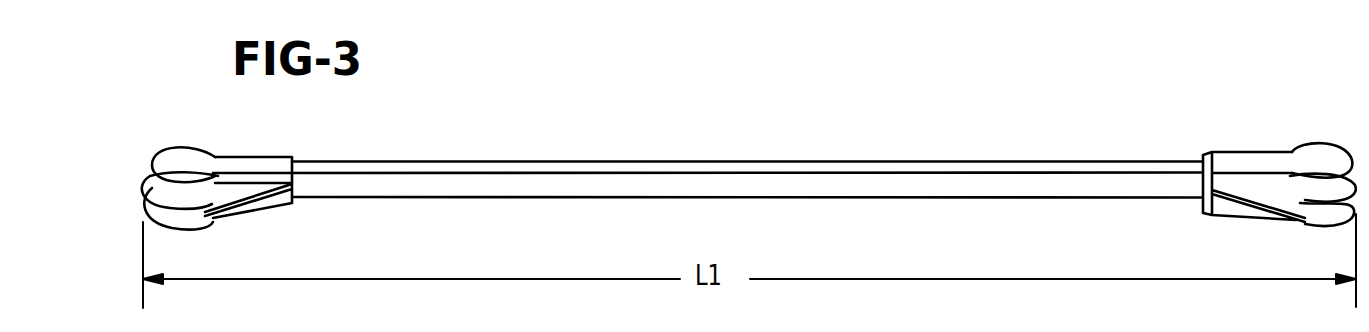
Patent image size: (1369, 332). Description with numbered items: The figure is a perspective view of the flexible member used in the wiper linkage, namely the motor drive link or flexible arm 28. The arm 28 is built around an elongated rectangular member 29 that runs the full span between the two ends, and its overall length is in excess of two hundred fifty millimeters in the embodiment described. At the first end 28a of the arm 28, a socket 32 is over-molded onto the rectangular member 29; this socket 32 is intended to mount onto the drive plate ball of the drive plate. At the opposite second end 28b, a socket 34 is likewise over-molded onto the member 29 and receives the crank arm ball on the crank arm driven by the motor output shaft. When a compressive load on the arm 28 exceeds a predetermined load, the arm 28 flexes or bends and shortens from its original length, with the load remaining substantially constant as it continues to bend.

The motor drive link or flexible arm 28 is at (687, 156).
The elongated rectangular member 29 is at (766, 183).
The first end 28a is at (1190, 162).
The second end 28b is at (305, 163).
The socket 32 is at (1320, 162).
The socket 34 is at (193, 160).